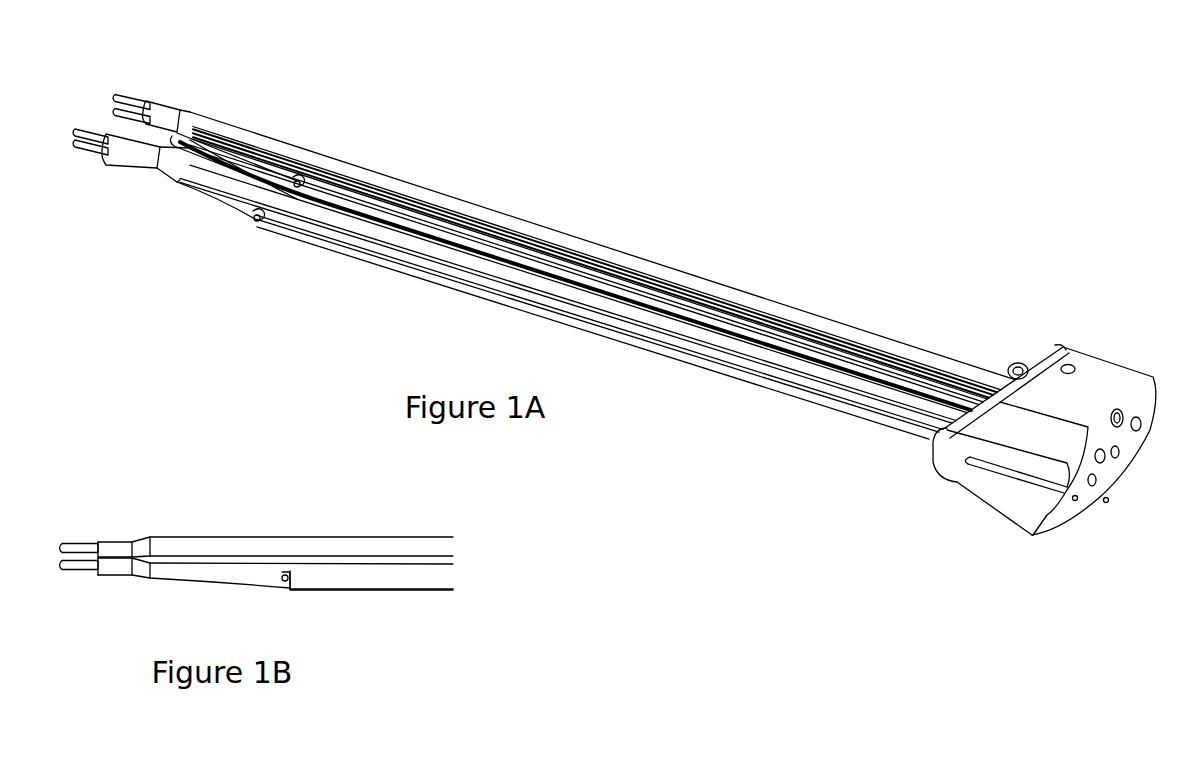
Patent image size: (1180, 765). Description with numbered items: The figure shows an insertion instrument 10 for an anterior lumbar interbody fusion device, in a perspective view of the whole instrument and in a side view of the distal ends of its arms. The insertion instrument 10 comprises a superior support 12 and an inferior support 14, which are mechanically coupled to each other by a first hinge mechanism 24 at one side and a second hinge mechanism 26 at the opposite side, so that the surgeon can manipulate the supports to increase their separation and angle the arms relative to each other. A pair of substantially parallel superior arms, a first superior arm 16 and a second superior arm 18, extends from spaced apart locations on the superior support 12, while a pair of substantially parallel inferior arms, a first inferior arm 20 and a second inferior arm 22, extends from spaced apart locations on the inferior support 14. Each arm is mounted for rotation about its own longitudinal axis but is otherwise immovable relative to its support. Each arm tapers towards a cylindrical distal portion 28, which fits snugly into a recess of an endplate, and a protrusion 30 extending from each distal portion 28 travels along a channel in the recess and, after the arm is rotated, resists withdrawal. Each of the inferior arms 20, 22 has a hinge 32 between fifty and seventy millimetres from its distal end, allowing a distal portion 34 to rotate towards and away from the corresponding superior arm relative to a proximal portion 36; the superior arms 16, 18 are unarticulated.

In FIG. 1A, the insertion instrument 10 is at (762, 256).
In FIG. 1B, the insertion instrument 10 is at (226, 518).
In FIG. 1A, the superior support 12 is at (1100, 370).
In FIG. 1A, the inferior support 14 is at (1018, 502).
In FIG. 1A, the first superior arm 16 is at (383, 230).
In FIG. 1B, the first superior arm 16 is at (323, 548).
In FIG. 1A, the second superior arm 18 is at (445, 205).
In FIG. 1A, the first inferior arm 20 is at (325, 243).
In FIG. 1B, the first inferior arm 20 is at (353, 592).
In FIG. 1A, the second inferior arm 22 is at (372, 207).
In FIG. 1A, the first hinge mechanism 24 is at (945, 460).
In FIG. 1A, the second hinge mechanism 26 is at (1023, 356).
In FIG. 1B, the distal portion 28 is at (80, 543).
In FIG. 1A, the protrusion 30 is at (140, 110).
In FIG. 1A, the hinge 32 is at (298, 178).
In FIG. 1B, the hinge 32 is at (282, 582).
In FIG. 1A, the distal portion 34 is at (173, 192).
In FIG. 1B, the distal portion 34 is at (160, 577).
In FIG. 1A, the proximal portion 36 is at (432, 292).
In FIG. 1B, the proximal portion 36 is at (428, 583).